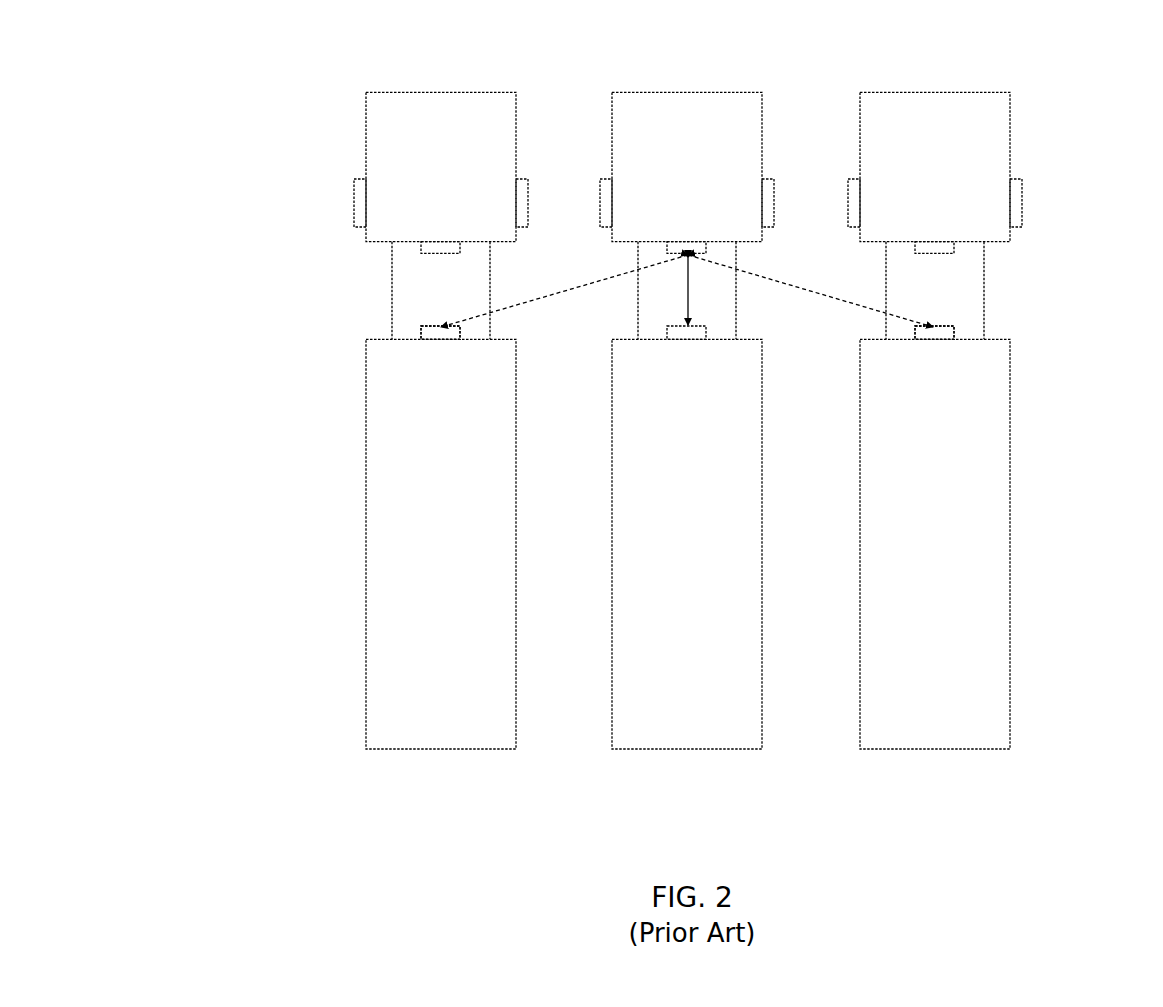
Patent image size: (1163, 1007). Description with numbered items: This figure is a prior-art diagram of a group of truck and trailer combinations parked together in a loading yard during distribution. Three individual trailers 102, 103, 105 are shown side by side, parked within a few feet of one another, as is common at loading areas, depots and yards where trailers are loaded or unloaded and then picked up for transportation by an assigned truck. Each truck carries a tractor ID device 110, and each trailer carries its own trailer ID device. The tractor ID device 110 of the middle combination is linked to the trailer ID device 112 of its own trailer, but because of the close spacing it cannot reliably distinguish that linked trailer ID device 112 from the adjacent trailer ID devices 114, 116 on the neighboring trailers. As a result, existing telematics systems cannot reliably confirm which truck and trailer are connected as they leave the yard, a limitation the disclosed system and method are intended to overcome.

The trailer 102 is at (393, 524).
The trailer 103 is at (692, 490).
The trailer 105 is at (948, 625).
The tractor ID device 110 is at (687, 250).
The linked trailer ID device 112 is at (700, 328).
The adjacent trailer ID device 114 is at (440, 327).
The adjacent trailer ID device 116 is at (937, 327).